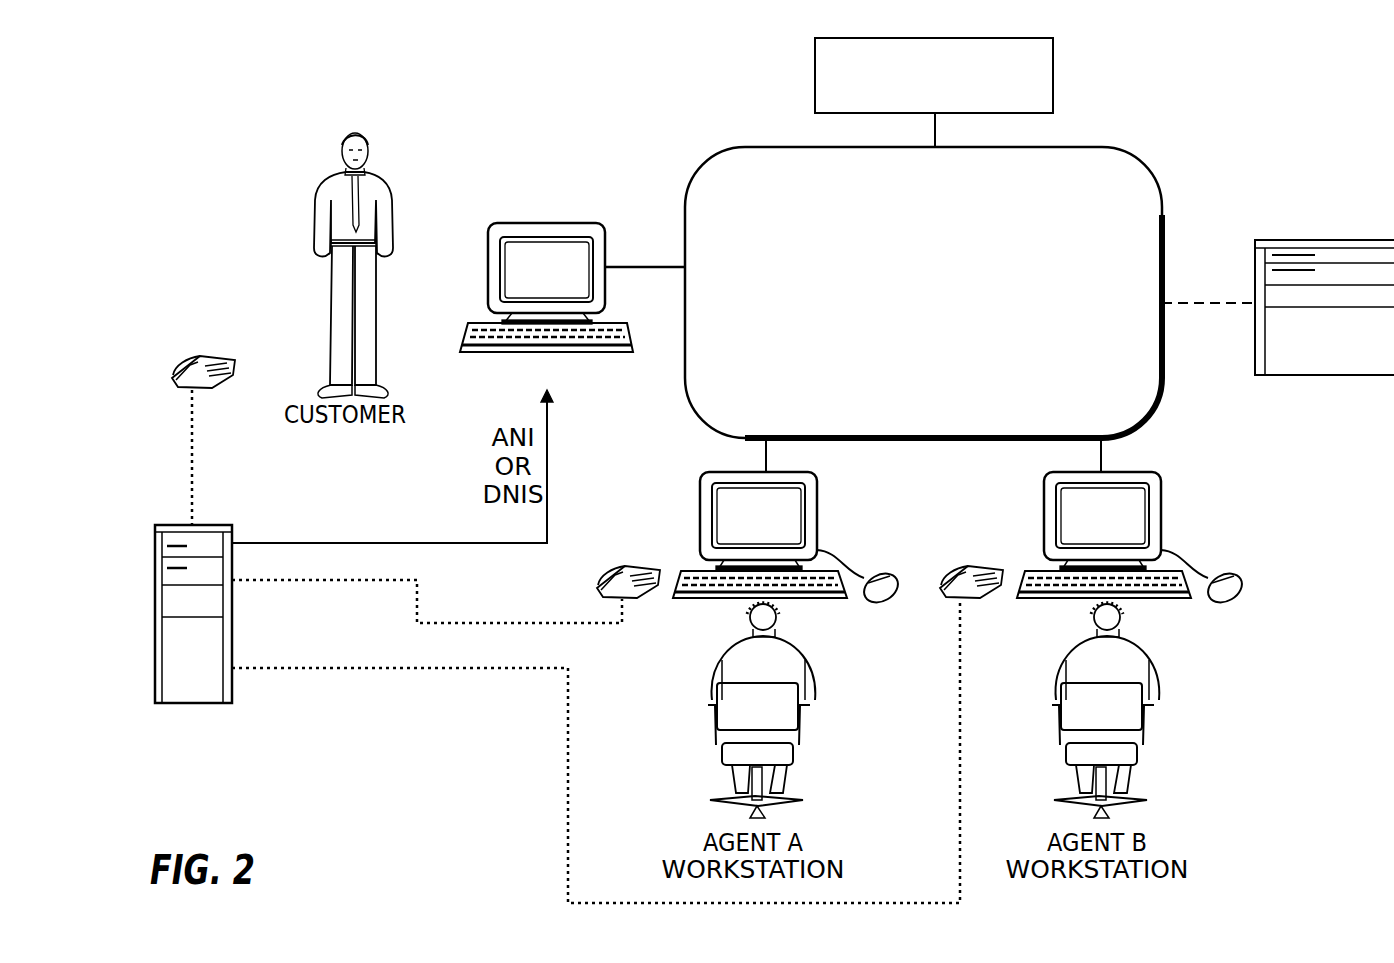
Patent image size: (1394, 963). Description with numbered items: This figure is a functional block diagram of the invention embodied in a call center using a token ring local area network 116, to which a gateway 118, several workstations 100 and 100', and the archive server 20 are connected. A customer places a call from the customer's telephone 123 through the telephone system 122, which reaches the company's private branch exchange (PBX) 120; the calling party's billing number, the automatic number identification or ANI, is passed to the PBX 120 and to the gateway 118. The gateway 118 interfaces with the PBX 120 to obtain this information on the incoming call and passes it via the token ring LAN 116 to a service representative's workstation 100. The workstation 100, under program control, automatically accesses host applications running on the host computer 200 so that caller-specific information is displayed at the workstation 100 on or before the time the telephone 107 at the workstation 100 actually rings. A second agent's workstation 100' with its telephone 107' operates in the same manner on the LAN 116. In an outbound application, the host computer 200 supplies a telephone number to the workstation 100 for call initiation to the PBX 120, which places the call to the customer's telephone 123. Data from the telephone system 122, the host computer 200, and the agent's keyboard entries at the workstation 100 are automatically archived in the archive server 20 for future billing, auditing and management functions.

The archive server 20 is at (920, 107).
The token ring local area network 116 is at (902, 254).
The gateway 118 is at (596, 207).
The host computer 200 is at (1379, 219).
The customer's telephone 123 is at (235, 346).
The telephone system 122 is at (188, 478).
The private branch exchange (PBX) 120 is at (130, 627).
The telephone 107 is at (631, 552).
The workstation 100 is at (808, 540).
The telephone 107' is at (977, 552).
The workstation 100' is at (1152, 540).